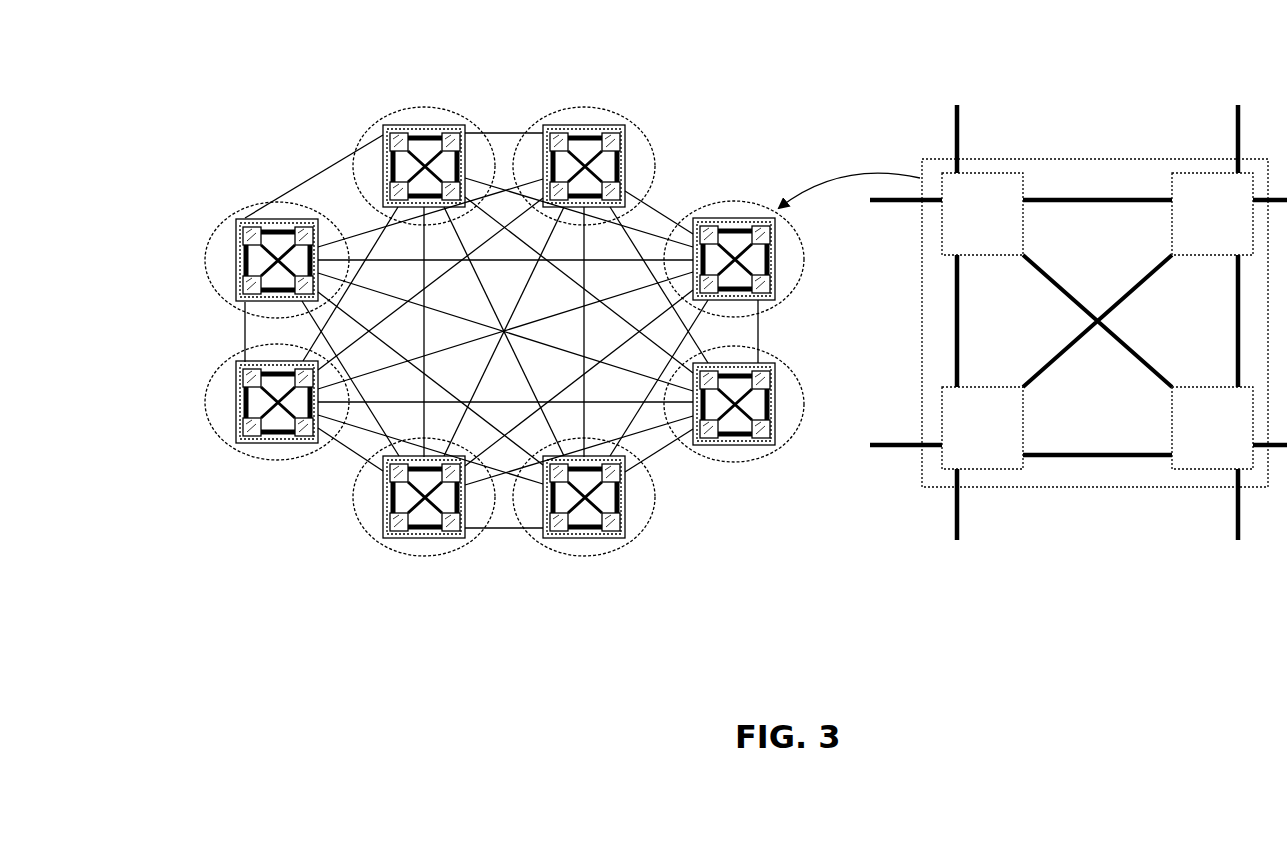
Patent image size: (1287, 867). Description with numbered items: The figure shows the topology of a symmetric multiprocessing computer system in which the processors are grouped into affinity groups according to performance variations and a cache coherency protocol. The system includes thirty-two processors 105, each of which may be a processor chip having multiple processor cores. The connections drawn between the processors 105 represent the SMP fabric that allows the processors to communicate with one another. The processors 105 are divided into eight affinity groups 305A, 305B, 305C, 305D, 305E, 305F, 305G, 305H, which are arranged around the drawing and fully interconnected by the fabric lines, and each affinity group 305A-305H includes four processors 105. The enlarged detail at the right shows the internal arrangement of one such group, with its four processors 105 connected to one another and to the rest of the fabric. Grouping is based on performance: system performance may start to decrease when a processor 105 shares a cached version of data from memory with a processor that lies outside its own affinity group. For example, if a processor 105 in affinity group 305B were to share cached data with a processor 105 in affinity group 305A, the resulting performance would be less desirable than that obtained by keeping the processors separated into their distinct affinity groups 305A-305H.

The affinity group 305A is at (426, 104).
The affinity group 305B is at (540, 110).
The affinity group 305C is at (698, 200).
The affinity group 305D is at (786, 455).
The affinity group 305E is at (555, 560).
The affinity group 305F is at (448, 560).
The affinity group 305G is at (207, 440).
The affinity group 305H is at (237, 201).
The processor 105 is at (1033, 322).